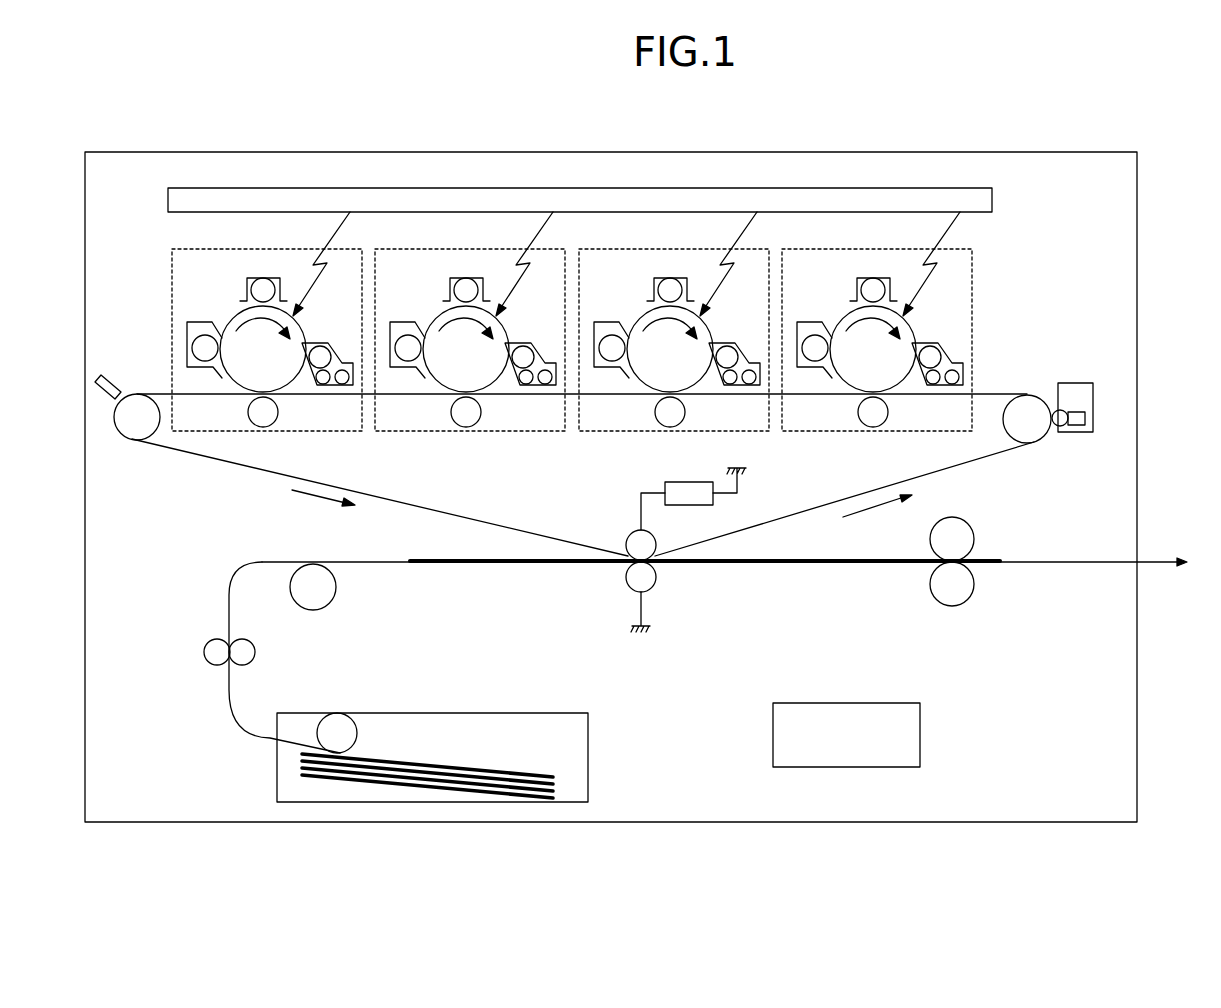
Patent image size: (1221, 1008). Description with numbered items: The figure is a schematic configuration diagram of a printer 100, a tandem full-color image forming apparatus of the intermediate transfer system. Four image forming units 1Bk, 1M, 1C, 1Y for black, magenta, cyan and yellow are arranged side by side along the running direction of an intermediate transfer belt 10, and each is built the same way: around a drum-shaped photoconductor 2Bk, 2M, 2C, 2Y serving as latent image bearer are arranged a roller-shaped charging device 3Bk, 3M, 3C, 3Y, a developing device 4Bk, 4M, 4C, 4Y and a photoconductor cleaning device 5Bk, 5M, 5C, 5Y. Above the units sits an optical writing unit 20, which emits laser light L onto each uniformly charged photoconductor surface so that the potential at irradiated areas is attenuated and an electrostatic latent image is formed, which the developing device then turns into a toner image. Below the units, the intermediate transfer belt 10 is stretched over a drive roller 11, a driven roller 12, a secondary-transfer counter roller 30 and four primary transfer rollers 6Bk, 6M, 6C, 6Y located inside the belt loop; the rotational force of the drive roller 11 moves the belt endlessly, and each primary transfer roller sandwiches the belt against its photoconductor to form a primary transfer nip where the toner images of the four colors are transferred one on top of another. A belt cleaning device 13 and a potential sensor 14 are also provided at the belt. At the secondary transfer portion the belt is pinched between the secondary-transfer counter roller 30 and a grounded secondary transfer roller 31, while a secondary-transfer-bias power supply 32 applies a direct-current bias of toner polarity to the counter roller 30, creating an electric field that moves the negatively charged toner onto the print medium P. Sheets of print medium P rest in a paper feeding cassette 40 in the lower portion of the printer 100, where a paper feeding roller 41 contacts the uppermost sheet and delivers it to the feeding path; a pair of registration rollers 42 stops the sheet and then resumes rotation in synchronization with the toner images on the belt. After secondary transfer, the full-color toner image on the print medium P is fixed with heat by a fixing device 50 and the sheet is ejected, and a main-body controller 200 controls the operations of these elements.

The printer 100 is at (1138, 152).
The optical writing unit 20 is at (993, 189).
The image forming unit 1Bk is at (376, 250).
The image forming unit 1M is at (579, 250).
The image forming unit 1C is at (783, 250).
The image forming unit 1Y is at (986, 250).
The photoconductor 2Bk is at (229, 316).
The photoconductor 2M is at (432, 316).
The photoconductor 2C is at (636, 316).
The photoconductor 2Y is at (839, 316).
The charging device 3Bk is at (247, 283).
The charging device 3M is at (450, 283).
The charging device 3C is at (654, 283).
The charging device 3Y is at (857, 283).
The developing device 4Bk is at (321, 345).
The developing device 4M is at (524, 345).
The developing device 4C is at (728, 345).
The developing device 4Y is at (931, 345).
The photoconductor cleaning device 5Bk is at (199, 322).
The photoconductor cleaning device 5M is at (402, 322).
The photoconductor cleaning device 5C is at (606, 322).
The photoconductor cleaning device 5Y is at (809, 322).
The primary transfer roller 6Bk is at (279, 412).
The primary transfer roller 6M is at (482, 412).
The primary transfer roller 6C is at (686, 412).
The primary transfer roller 6Y is at (889, 412).
The laser light L is at (626, 264).
The intermediate transfer belt 10 is at (243, 470).
The drive roller 11 is at (136, 396).
The driven roller 12 is at (1031, 400).
The belt cleaning device 13 is at (1079, 383).
The potential sensor 14 is at (104, 375).
The print medium P is at (482, 560).
The secondary-transfer counter roller 30 is at (628, 535).
The secondary transfer roller 31 is at (628, 585).
The secondary-transfer-bias power supply 32 is at (666, 483).
The fixing device 50 is at (988, 532).
The paper feeding cassette 40 is at (589, 713).
The paper feeding roller 41 is at (341, 725).
The pair of registration rollers 42 is at (204, 662).
The main-body controller 200 is at (921, 703).